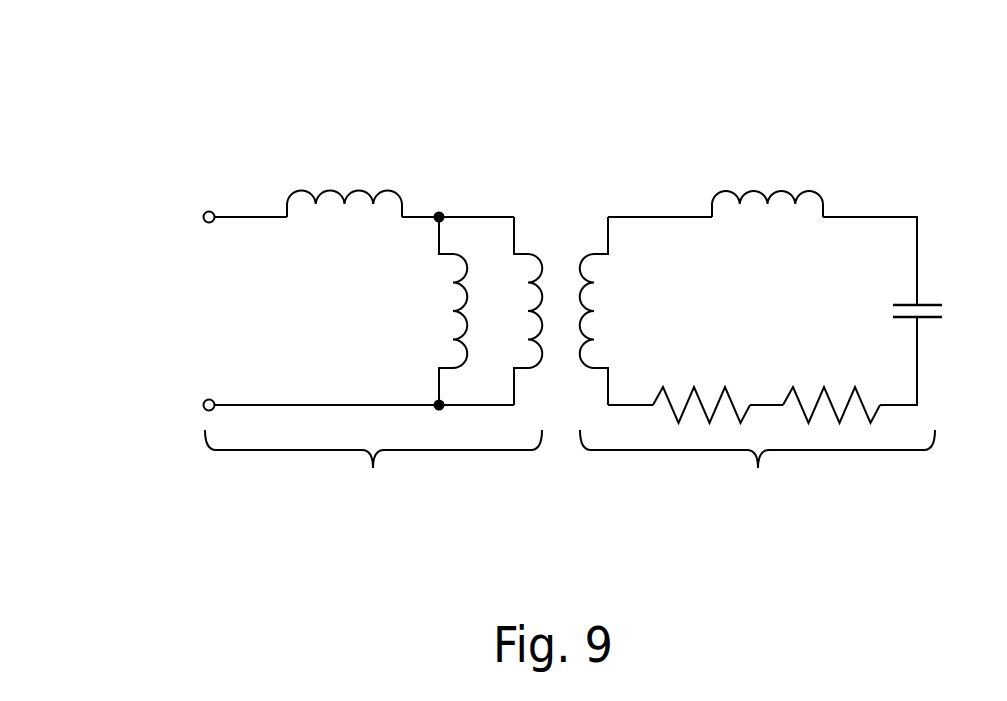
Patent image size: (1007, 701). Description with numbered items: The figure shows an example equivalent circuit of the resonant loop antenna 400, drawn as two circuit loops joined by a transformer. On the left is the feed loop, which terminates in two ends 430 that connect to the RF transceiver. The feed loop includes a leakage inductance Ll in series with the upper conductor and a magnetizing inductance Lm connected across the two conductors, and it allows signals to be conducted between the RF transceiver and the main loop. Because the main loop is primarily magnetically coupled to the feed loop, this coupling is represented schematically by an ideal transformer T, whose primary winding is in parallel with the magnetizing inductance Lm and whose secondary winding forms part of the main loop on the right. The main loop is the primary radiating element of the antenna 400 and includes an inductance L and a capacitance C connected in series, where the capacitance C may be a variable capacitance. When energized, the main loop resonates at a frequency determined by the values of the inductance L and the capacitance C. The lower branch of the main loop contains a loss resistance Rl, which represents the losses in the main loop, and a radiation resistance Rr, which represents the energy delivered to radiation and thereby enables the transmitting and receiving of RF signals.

The resonant loop antenna 400 is at (591, 270).
The two ends 430 is at (203, 405).
The leakage inductance Ll is at (344, 182).
The magnetizing inductance Lm is at (436, 311).
The ideal transformer T is at (561, 307).
The inductance L is at (767, 182).
The capacitance C is at (935, 313).
The loss resistance Rl is at (701, 381).
The radiation resistance Rr is at (831, 381).